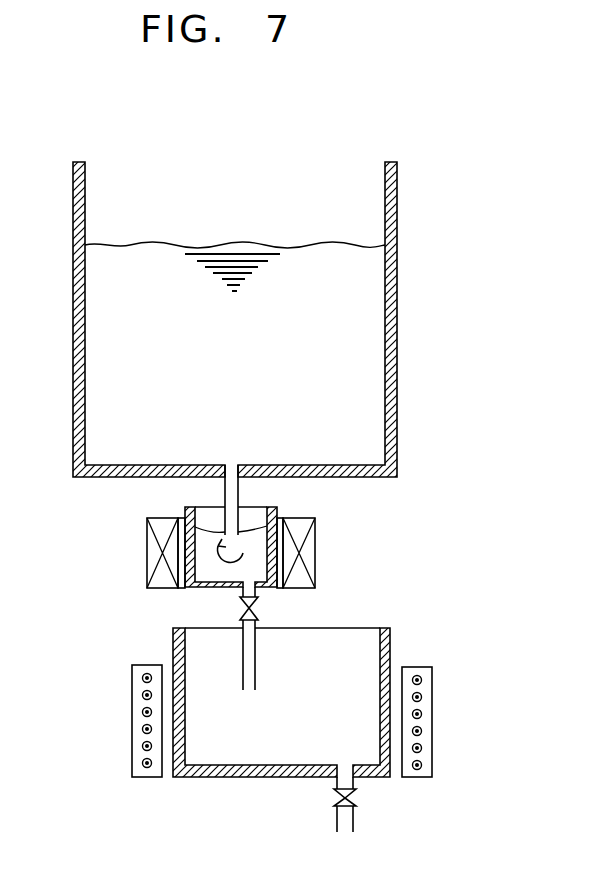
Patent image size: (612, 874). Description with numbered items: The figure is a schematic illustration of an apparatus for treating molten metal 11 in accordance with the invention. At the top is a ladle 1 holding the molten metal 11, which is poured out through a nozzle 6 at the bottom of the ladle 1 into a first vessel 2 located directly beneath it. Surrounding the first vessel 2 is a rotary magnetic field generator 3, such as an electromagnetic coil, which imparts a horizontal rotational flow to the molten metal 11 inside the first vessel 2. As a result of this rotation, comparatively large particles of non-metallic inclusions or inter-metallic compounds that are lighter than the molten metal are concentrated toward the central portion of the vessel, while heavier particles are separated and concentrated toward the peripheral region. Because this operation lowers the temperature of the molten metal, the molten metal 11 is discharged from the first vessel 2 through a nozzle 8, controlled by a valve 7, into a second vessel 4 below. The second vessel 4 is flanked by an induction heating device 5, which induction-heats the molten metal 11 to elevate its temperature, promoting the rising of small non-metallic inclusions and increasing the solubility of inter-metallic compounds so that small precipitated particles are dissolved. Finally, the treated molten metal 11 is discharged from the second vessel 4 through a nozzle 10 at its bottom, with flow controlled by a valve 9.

The ladle 1 is at (397, 300).
The first vessel 2 is at (277, 512).
The rotary magnetic field generator 3 is at (317, 566).
The second vessel 4 is at (358, 628).
The induction heating device 5 is at (432, 715).
The nozzle 6 is at (225, 500).
The valve 7 is at (262, 606).
The nozzle 8 is at (241, 592).
The valve 9 is at (356, 798).
The nozzle 10 is at (353, 820).
The molten metal 11 is at (157, 268).